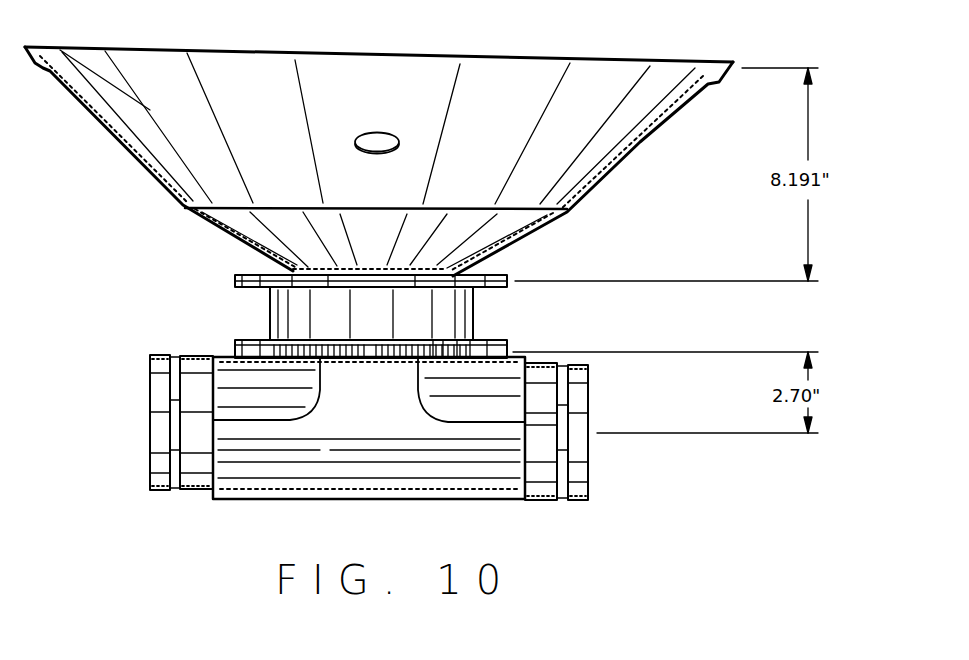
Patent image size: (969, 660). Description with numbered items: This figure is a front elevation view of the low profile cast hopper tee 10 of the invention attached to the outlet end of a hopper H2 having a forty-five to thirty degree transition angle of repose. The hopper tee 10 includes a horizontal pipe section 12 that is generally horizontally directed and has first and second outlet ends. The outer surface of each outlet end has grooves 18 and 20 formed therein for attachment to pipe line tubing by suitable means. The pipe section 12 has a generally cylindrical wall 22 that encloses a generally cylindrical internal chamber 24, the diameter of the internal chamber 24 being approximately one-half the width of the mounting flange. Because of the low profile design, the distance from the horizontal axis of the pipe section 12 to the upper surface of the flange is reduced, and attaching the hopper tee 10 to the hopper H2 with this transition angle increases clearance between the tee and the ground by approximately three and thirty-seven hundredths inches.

The hopper H2 is at (600, 88).
The cast hopper tee 10 is at (142, 364).
The horizontal pipe section 12 is at (543, 362).
The groove 18 is at (563, 368).
The groove 20 is at (173, 480).
The cylindrical wall 22 is at (505, 452).
The internal chamber 24 is at (266, 468).